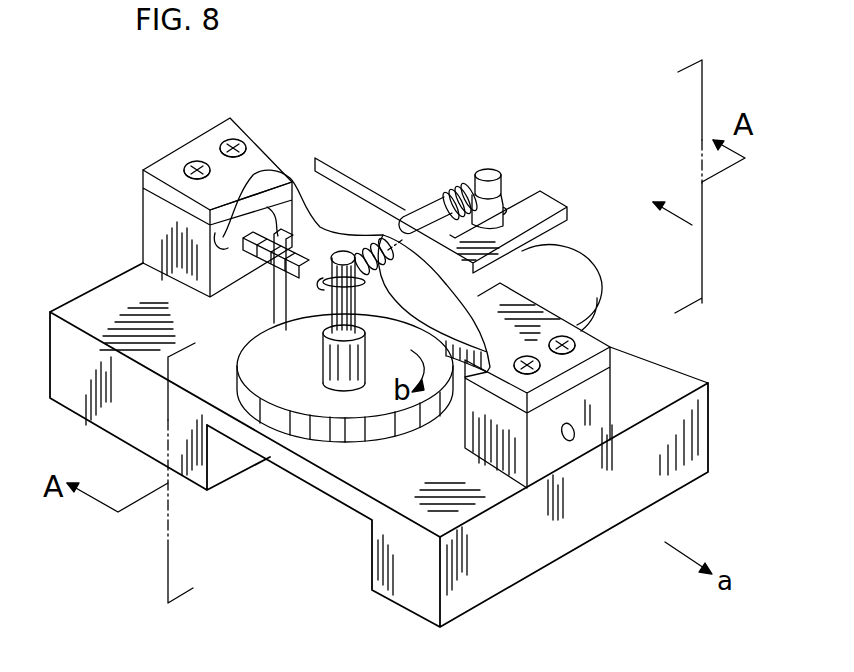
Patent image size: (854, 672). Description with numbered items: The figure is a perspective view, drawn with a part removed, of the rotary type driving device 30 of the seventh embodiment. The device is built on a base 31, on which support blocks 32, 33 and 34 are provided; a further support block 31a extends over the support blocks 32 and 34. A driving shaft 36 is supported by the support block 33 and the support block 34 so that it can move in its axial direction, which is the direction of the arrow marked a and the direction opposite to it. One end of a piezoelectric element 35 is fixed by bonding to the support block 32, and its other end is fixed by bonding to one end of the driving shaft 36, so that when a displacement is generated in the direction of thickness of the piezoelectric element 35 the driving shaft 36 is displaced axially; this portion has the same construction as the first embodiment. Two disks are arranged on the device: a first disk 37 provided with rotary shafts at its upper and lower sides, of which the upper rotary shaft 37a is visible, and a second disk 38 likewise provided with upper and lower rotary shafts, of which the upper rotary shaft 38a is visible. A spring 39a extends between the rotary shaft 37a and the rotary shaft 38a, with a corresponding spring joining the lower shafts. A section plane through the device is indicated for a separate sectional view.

The rotary type driving device 30 is at (403, 150).
The base 31 is at (553, 523).
The support block 31a is at (200, 150).
The support block 32 is at (152, 212).
The support block 33 is at (278, 300).
The support block 34 is at (513, 447).
The piezoelectric element 35 is at (296, 208).
The driving shaft 36 is at (457, 372).
The first disk 37 is at (300, 423).
The rotary shaft 37a is at (323, 430).
The second disk 38 is at (577, 277).
The rotary shaft 38a is at (489, 167).
The spring 39a is at (457, 197).